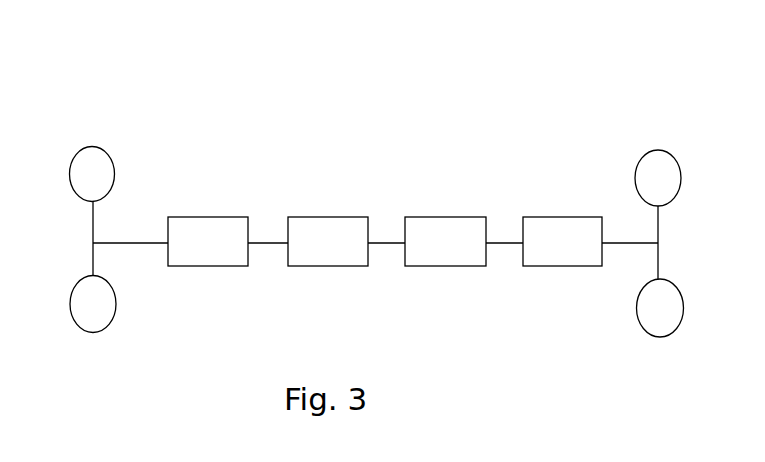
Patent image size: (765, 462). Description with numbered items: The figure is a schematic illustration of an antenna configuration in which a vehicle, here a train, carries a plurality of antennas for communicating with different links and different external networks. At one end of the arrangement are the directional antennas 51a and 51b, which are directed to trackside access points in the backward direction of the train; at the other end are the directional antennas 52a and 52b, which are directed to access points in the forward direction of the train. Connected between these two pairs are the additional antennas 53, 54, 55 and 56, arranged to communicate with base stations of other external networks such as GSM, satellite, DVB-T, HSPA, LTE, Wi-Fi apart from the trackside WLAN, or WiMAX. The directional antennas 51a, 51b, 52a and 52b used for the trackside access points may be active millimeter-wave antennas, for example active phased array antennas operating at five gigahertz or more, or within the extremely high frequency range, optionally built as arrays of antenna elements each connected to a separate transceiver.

The directional antenna 51a is at (103, 148).
The directional antenna 51b is at (95, 333).
The directional antenna 52a is at (662, 151).
The directional antenna 52b is at (657, 337).
The additional antenna 53 is at (197, 217).
The additional antenna 54 is at (317, 217).
The additional antenna 55 is at (445, 217).
The additional antenna 56 is at (551, 217).